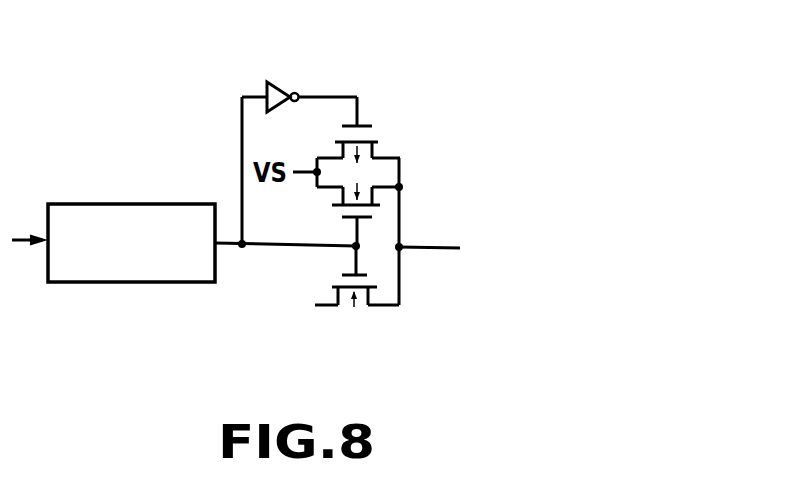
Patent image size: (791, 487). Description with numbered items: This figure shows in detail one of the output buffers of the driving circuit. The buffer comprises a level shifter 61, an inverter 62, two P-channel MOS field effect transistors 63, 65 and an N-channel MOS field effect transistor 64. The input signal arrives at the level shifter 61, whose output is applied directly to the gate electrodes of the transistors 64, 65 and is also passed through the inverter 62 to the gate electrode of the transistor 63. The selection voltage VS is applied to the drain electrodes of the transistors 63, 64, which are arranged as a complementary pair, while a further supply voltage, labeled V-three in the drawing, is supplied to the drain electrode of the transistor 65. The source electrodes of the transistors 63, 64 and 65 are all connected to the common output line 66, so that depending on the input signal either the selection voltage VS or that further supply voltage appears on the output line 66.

The level shifter 61 is at (133, 203).
The inverter 62 is at (278, 82).
The P-channel MOS field effect transistor 63 is at (378, 128).
The N-channel MOS field effect transistor 64 is at (377, 182).
The P-channel MOS field effect transistor 65 is at (360, 313).
The output line 66 is at (438, 247).